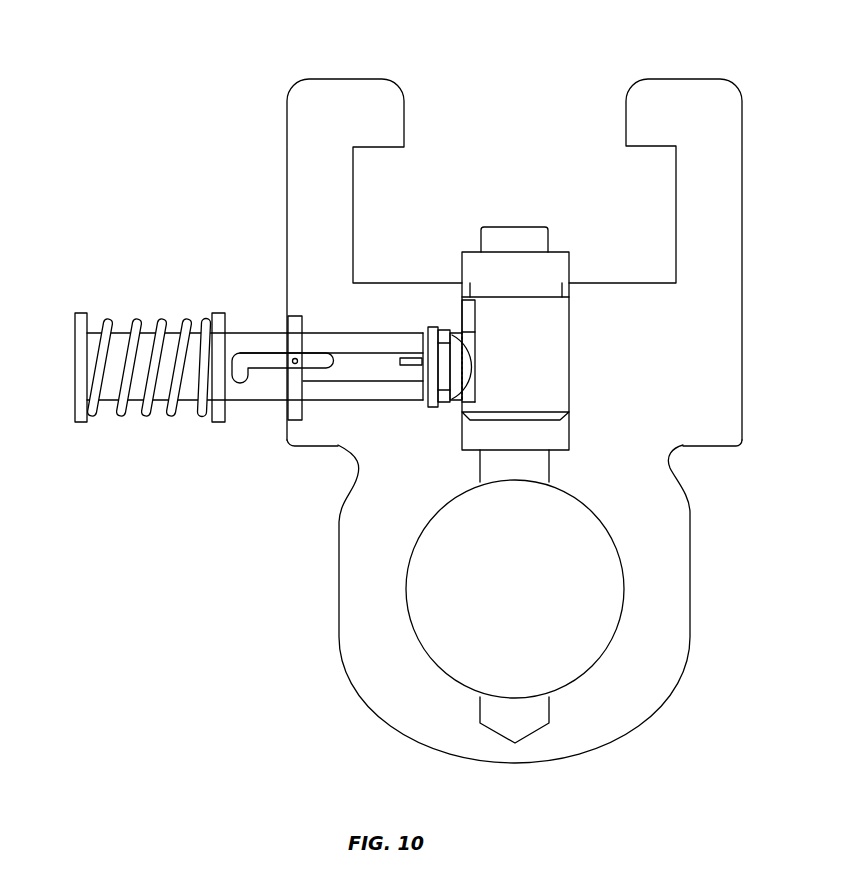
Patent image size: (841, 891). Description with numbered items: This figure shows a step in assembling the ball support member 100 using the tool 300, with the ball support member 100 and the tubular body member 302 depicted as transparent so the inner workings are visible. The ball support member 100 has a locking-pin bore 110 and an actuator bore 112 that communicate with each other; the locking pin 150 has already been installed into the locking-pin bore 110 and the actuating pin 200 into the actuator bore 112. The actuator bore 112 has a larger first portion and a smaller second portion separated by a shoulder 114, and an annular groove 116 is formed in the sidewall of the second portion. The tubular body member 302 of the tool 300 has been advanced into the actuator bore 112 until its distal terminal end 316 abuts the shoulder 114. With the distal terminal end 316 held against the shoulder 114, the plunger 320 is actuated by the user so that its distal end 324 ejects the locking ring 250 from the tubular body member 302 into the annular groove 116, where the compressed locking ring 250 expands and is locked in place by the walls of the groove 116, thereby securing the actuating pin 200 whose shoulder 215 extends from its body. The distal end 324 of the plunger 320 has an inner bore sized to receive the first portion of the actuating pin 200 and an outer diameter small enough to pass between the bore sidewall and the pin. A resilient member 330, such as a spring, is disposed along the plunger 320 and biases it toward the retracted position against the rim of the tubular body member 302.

The ball support member 100 is at (478, 386).
The locking-pin bore 110 is at (572, 308).
The actuator bore 112 is at (372, 332).
The shoulder 114 is at (422, 400).
The groove 116 is at (434, 327).
The locking pin 150 is at (513, 240).
The actuating pin 200 is at (515, 385).
The shoulder 215 is at (452, 396).
The locking ring 250 is at (302, 408).
The tool 300 is at (235, 336).
The tubular body member 302 is at (268, 327).
The distal terminal end 316 is at (455, 345).
The plunger 320 is at (82, 313).
The distal end 324 is at (440, 398).
The resilient member 330 is at (187, 323).